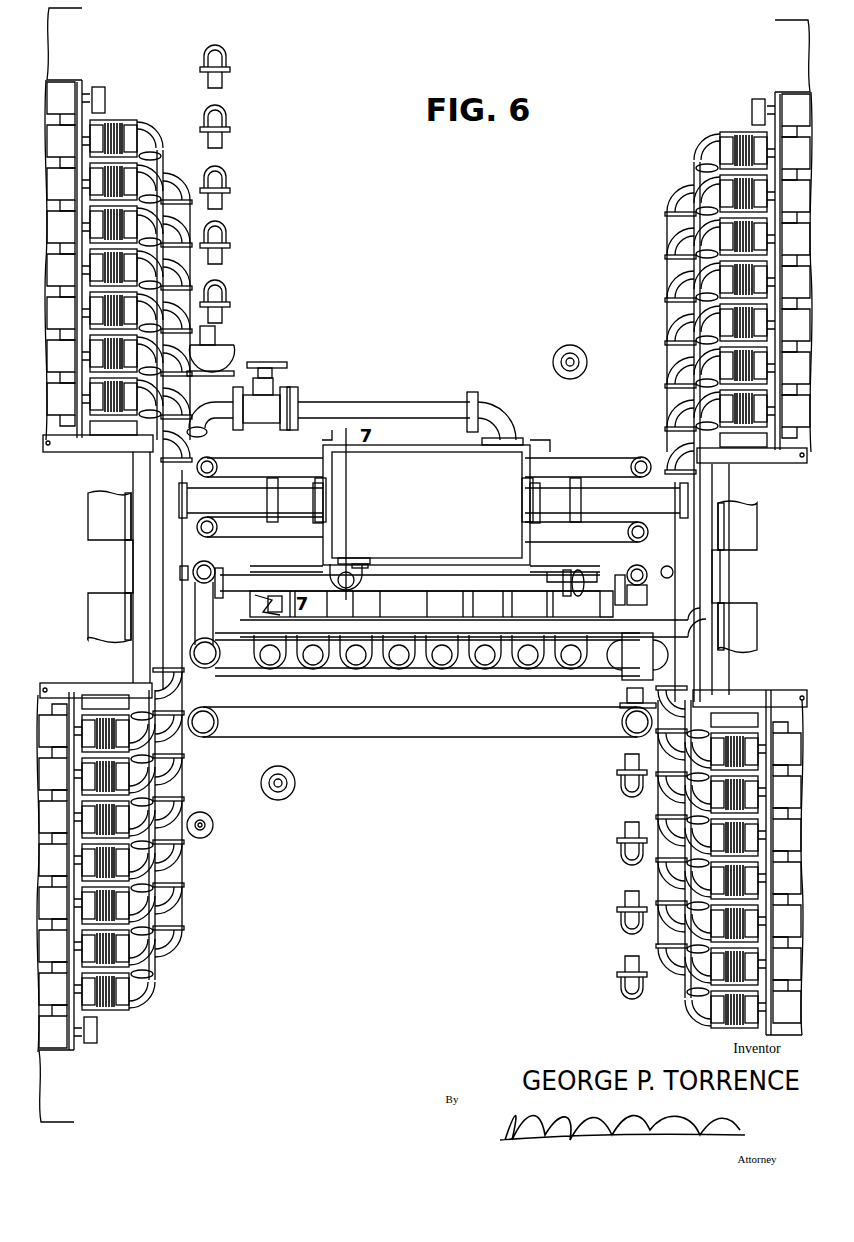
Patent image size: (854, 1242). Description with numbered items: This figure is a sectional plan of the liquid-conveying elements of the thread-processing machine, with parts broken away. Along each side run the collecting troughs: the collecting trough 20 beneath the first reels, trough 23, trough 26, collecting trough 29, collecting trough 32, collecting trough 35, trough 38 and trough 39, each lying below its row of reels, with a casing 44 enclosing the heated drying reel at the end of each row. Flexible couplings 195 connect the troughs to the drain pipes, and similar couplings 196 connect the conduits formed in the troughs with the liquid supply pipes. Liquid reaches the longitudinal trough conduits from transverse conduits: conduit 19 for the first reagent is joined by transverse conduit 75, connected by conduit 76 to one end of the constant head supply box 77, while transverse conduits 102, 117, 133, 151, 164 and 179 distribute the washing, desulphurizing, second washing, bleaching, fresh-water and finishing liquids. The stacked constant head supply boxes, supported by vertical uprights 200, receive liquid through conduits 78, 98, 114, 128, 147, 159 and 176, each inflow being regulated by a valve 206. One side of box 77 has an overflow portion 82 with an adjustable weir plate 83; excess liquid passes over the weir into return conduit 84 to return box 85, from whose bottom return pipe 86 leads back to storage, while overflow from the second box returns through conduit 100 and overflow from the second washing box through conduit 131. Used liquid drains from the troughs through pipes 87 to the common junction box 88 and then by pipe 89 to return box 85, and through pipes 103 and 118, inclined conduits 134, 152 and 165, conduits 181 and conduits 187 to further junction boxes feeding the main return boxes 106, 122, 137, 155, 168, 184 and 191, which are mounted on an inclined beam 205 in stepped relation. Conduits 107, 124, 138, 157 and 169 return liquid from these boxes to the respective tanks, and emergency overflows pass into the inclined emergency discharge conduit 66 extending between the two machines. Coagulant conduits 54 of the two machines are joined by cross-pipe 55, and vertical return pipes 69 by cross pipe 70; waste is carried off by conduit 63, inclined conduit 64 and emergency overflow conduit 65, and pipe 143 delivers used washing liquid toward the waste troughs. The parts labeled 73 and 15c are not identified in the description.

The casing 44 is at (82, 52).
The trough 39 is at (424, 565).
The trough 38 is at (424, 574).
The collecting trough 35 is at (424, 574).
The collecting trough 32 is at (424, 574).
The collecting trough 29 is at (424, 574).
The trough 26 is at (424, 574).
The trough 23 is at (424, 574).
The collecting trough 20 is at (424, 574).
The flexible couplings 195 is at (116, 122).
The conduits 187 is at (152, 143).
The conduits 181 is at (424, 575).
The inclined conduits 165 is at (424, 575).
The inclined conduits 152 is at (424, 575).
The inclined conduits 134 is at (424, 575).
The pipes 118 is at (424, 575).
The transverse conduit 179 is at (180, 212).
The transverse conduit 164 is at (180, 258).
The transverse conduit 151 is at (213, 292).
The transverse conduit 133 is at (215, 342).
The transverse conduit 117 is at (675, 392).
The transverse conduit 102 is at (660, 745).
The pipes 103 is at (170, 432).
The conduit 78 is at (218, 48).
The conduit 98 is at (218, 110).
The conduit 114 is at (218, 170).
The conduit 128 is at (218, 230).
The conduit 147 is at (218, 302).
The valve 206 is at (270, 400).
The conduit 159 is at (280, 366).
The conduit 176 is at (220, 430).
The coagulant conduit 54 is at (218, 468).
The cross-pipe 55 is at (424, 467).
The conduit 76 is at (433, 500).
The vertical return pipe 69 is at (218, 528).
The cross pipe 70 is at (422, 529).
The constant head supply box 77 is at (426, 505).
The vertical uprights 200 is at (351, 433).
The weir plate 83 is at (346, 558).
The overflow portion 82 is at (360, 562).
The main return box 168 is at (388, 582).
The inclined beam 205 is at (590, 590).
The conduit 100 is at (407, 583).
The return box 191 is at (268, 599).
The conduit 131 is at (328, 600).
The main return box 155 is at (384, 603).
The main return box 137 is at (430, 603).
The main return box 122 is at (491, 603).
The main return box 106 is at (530, 603).
The return conduit 84 is at (500, 587).
The return box 85 is at (574, 595).
The pipe 89 is at (568, 624).
The emergency discharge conduit 66 is at (422, 668).
The main return box 184 is at (340, 670).
The vertical pipe 73 is at (655, 582).
The transverse conduit 75 is at (426, 563).
The return pipe 86 is at (540, 588).
The emergency overflow conduit 65 is at (222, 668).
The conduit 169 is at (655, 666).
The conduit 157 is at (620, 699).
The conduit 63 is at (220, 722).
The inclined conduit 64 is at (430, 725).
The pipes 87 is at (128, 519).
The junction box 88 is at (125, 568).
The conduit 19 is at (63, 452).
The couplings 196 is at (108, 452).
The roller 15c is at (556, 352).
The pipe 143 is at (213, 825).
The conduit 138 is at (620, 800).
The conduit 124 is at (620, 866).
The conduit 107 is at (620, 918).